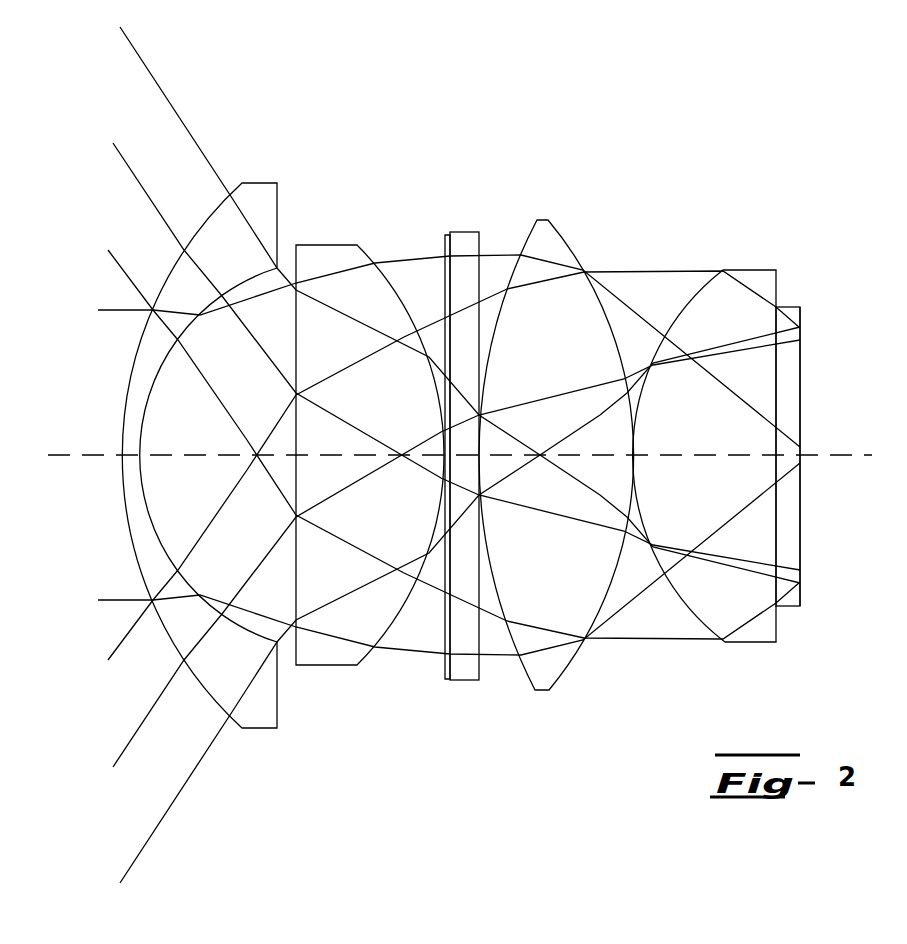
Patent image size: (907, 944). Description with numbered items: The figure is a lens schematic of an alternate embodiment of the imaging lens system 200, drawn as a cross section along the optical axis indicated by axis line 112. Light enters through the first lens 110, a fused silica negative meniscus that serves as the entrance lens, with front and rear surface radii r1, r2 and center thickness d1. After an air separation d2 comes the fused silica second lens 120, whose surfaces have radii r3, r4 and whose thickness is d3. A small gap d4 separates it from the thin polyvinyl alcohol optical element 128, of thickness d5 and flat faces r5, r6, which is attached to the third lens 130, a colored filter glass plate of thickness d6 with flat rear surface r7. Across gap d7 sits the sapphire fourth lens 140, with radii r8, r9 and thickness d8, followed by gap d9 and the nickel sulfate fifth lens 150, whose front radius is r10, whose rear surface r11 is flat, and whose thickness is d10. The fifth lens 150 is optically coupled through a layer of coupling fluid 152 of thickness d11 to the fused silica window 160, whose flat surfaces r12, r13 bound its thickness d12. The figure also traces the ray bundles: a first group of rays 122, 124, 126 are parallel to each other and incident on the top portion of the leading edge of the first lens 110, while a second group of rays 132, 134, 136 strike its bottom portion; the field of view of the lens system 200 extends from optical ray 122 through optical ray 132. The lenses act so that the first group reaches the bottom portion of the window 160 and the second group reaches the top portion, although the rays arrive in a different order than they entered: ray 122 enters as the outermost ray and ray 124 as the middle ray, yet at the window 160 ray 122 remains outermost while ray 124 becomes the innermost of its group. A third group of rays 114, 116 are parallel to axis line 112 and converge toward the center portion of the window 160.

The first lens 110 is at (258, 183).
The axis line 112 is at (55, 454).
The optical ray 114 is at (101, 310).
The optical ray 116 is at (102, 600).
The second lens 120 is at (340, 245).
The optical ray 122 is at (163, 97).
The optical ray 124 is at (147, 187).
The optical ray 126 is at (120, 274).
The optical element 128 is at (444, 246).
The third lens 130 is at (480, 238).
The optical ray 132 is at (145, 838).
The optical ray 134 is at (147, 713).
The optical ray 136 is at (120, 632).
The fourth lens 140 is at (547, 222).
The fifth lens 150 is at (760, 270).
The coupling fluid 152 is at (776, 308).
The window 160 is at (802, 368).
The lens system 200 is at (667, 190).
The thickness of first lens d1 is at (132, 453).
The separation between first and second lenses d2 is at (202, 453).
The thickness of second lens d3 is at (352, 455).
The separation between second lens and optical element d4 is at (444, 238).
The thickness of optical element d5 is at (449, 233).
The thickness of third lens d6 is at (443, 428).
The separation between third and fourth lenses d7 is at (498, 455).
The thickness of fourth lens d8 is at (568, 455).
The separation between fourth and fifth lenses d9 is at (636, 455).
The thickness of fifth lens d10 is at (686, 455).
The thickness of coupling fluid d11 is at (773, 458).
The thickness of window d12 is at (787, 455).
The radius of curvature of first lens first surface r1 is at (238, 728).
The radius of curvature of first lens second surface r2 is at (240, 630).
The radius of curvature of second lens first surface r3 is at (294, 667).
The radius of curvature of second lens second surface r4 is at (364, 660).
The radius of curvature of optical element first surface r5 is at (440, 670).
The radius of curvature of optical element/third lens interface r6 is at (450, 672).
The radius of curvature of third lens second surface r7 is at (480, 672).
The radius of curvature of fourth lens first surface r8 is at (530, 694).
The radius of curvature of fourth lens second surface r9 is at (561, 673).
The radius of curvature of fifth lens first surface r10 is at (718, 640).
The radius of curvature of fifth lens second surface r11 is at (777, 640).
The radius of curvature of window first surface r12 is at (777, 556).
The radius of curvature of window second surface r13 is at (802, 524).